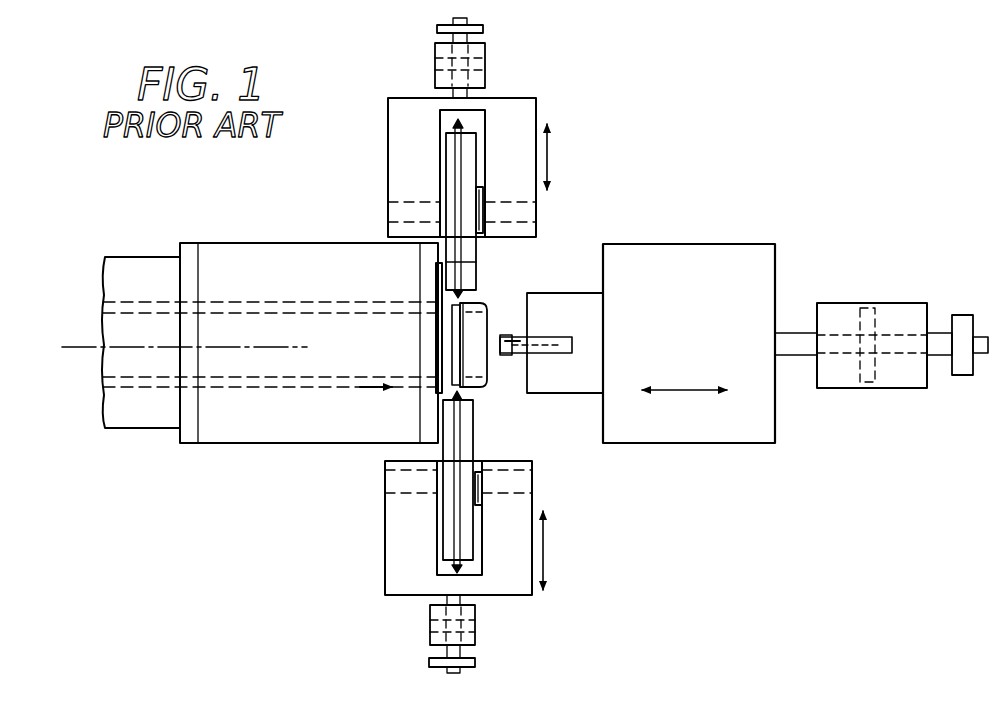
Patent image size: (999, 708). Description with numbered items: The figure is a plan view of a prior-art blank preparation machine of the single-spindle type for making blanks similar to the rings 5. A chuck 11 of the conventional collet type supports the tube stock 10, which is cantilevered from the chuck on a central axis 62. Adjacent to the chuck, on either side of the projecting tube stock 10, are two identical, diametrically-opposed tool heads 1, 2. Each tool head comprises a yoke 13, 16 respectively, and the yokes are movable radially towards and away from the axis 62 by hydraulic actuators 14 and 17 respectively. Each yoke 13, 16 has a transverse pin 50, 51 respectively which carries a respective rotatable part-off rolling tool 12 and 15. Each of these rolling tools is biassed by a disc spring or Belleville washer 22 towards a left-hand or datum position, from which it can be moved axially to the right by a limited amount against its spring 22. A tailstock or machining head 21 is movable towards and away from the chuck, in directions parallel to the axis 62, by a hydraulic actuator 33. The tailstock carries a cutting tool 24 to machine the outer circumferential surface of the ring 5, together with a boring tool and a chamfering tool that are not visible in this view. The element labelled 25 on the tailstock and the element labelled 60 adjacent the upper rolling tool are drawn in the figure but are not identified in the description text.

The tool head 1 is at (372, 129).
The tool head 2 is at (378, 484).
The ring 5 is at (478, 328).
The tube stock 10 is at (338, 300).
The chuck 11 is at (220, 262).
The part-off rolling tool 12 is at (446, 175).
The yoke 13 is at (388, 106).
The hydraulic actuator 14 is at (435, 62).
The part-off rolling tool 15 is at (445, 548).
The yoke 16 is at (385, 524).
The hydraulic actuator 17 is at (430, 630).
The tailstock 21 is at (642, 263).
The Belleville washer 22 is at (480, 190).
The cutting tool 24 is at (513, 357).
The ejector pin 25 is at (520, 340).
The hydraulic actuator 33 is at (895, 317).
The transverse pin 50 is at (525, 217).
The transverse pin 51 is at (527, 483).
The tool mount 60 is at (476, 260).
The central axis 62 is at (272, 345).